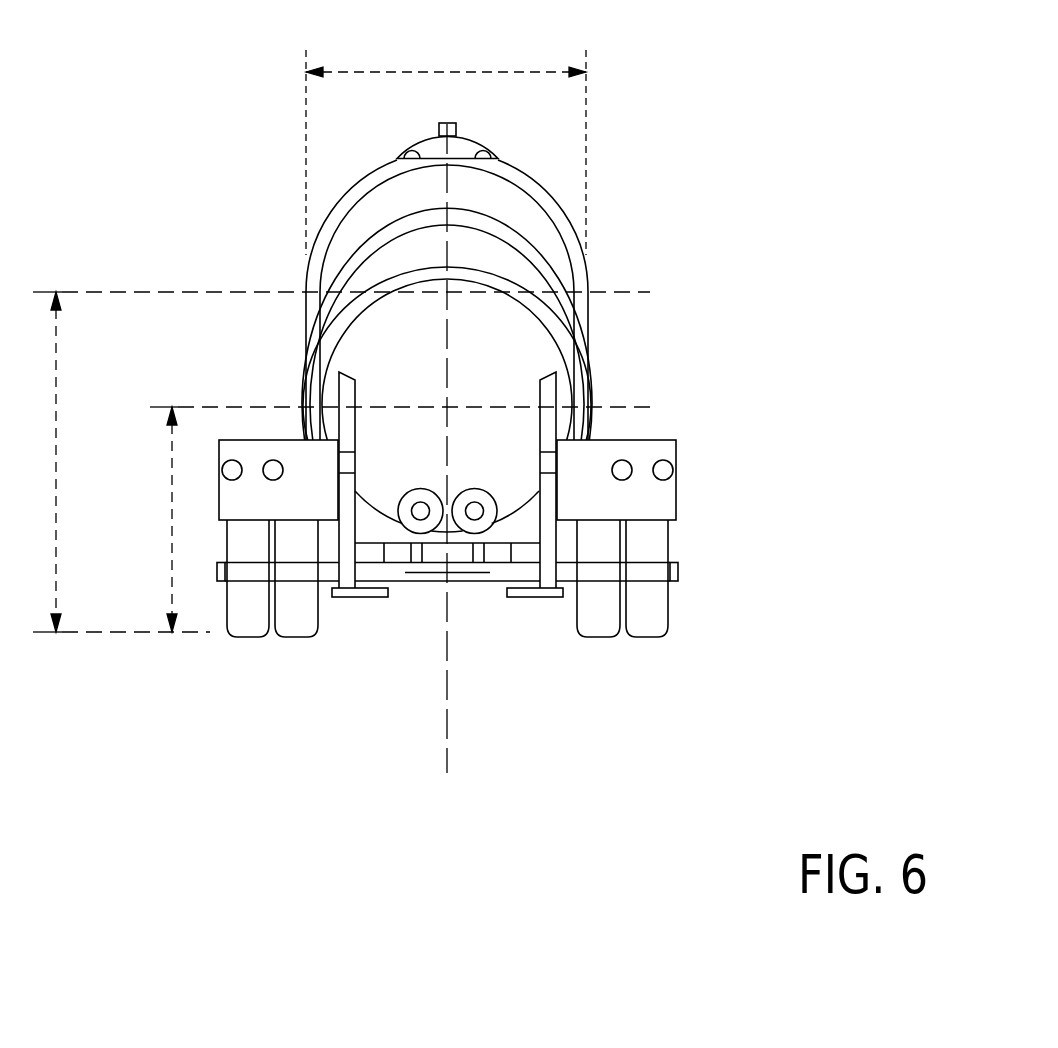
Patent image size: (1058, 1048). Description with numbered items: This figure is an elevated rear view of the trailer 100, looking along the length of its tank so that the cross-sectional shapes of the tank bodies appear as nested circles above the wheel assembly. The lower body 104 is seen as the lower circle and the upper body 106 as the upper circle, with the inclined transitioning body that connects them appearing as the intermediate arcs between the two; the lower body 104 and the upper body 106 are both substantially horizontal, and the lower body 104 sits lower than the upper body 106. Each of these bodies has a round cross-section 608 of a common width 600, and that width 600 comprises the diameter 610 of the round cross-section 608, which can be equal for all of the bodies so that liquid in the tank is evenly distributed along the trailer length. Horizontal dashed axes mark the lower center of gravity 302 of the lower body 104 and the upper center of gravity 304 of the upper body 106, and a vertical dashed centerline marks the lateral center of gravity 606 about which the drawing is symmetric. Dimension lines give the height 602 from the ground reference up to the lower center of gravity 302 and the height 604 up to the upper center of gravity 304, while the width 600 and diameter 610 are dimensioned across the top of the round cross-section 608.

The trailer 100 is at (713, 107).
The lower body 104 is at (510, 360).
The upper body 106 is at (508, 204).
The lower center of gravity 302 is at (630, 407).
The upper center of gravity 304 is at (630, 292).
The width 600 is at (446, 60).
The diameter 610 is at (446, 149).
The height 602 is at (155, 519).
The height 604 is at (114, 462).
The lateral center of gravity 606 is at (447, 677).
The round cross-section 608 is at (338, 198).